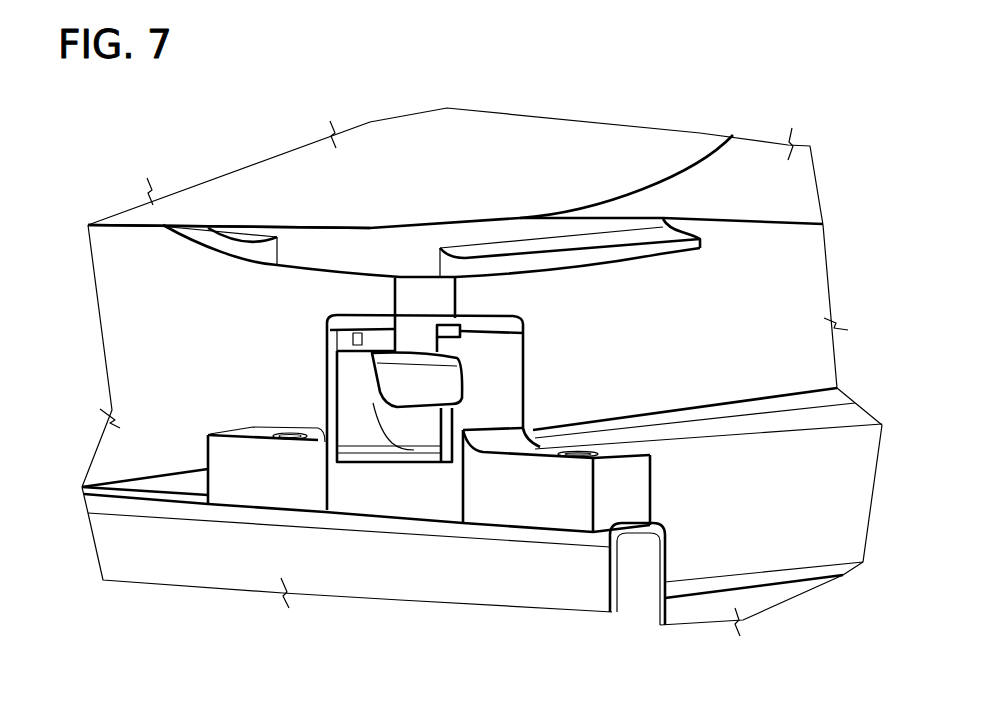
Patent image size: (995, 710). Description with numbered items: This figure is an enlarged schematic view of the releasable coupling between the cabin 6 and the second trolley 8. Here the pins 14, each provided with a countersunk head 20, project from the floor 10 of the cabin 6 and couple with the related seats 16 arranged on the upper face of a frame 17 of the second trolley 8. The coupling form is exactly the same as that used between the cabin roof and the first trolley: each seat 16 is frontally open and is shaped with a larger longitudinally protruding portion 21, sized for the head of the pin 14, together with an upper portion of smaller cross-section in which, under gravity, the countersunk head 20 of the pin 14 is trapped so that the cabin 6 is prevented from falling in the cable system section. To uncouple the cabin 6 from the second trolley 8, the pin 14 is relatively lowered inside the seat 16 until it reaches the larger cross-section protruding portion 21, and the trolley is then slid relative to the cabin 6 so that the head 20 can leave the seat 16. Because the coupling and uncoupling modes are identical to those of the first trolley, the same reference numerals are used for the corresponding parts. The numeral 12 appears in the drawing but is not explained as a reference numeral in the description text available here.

The cabin 6 is at (757, 226).
The second trolley 8 is at (766, 600).
The floor 10 is at (133, 226).
The retaining plate 12 is at (350, 299).
The pin 14 is at (458, 298).
The seat 16 is at (364, 435).
The frame 17 is at (733, 453).
The countersunk head 20 is at (398, 381).
The larger longitudinally protruding portion 21 is at (412, 436).